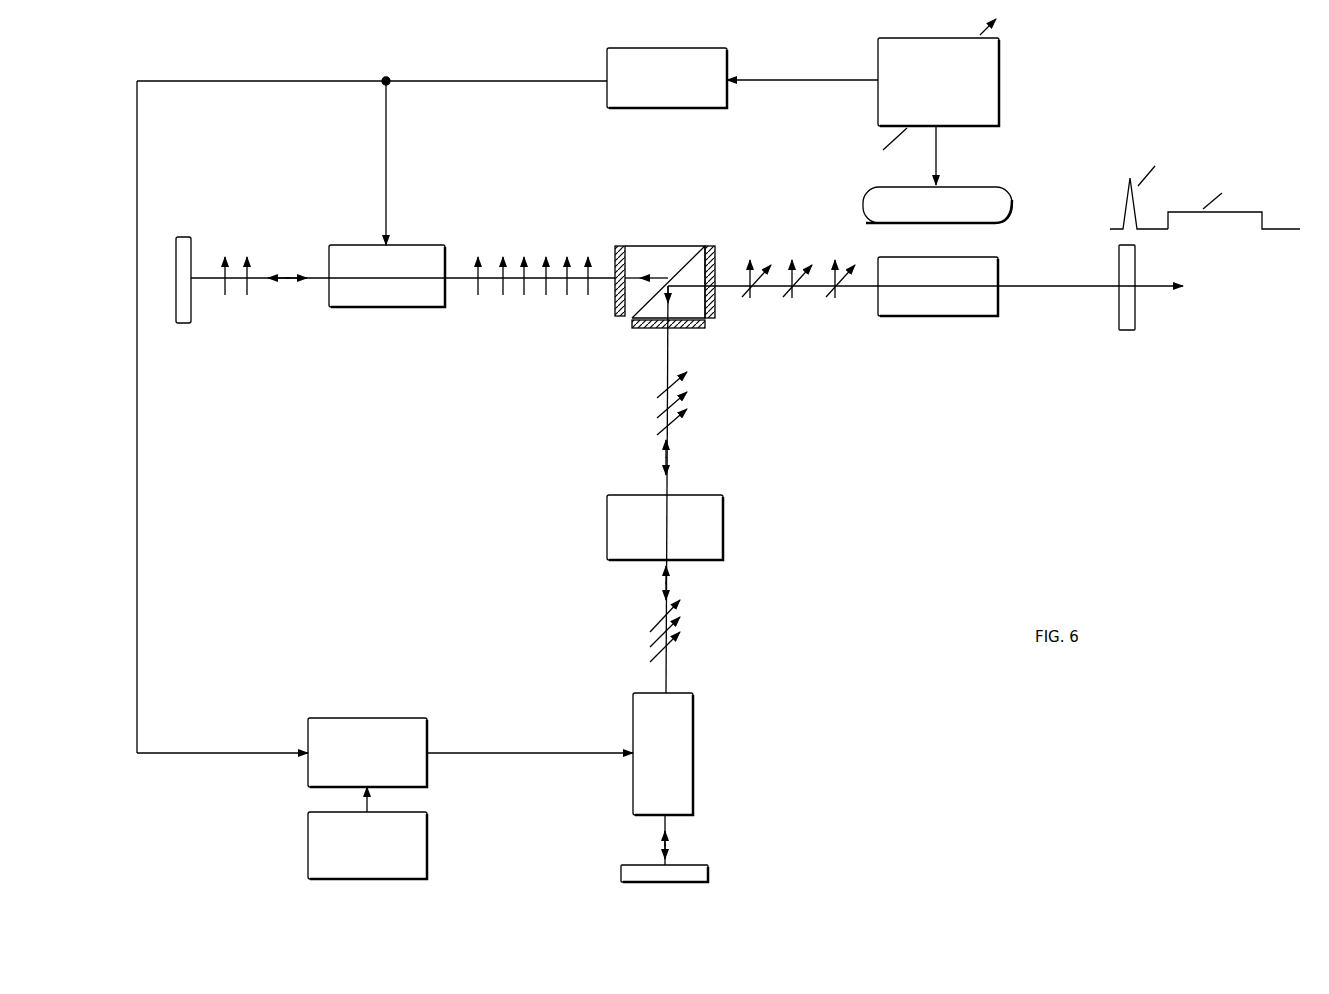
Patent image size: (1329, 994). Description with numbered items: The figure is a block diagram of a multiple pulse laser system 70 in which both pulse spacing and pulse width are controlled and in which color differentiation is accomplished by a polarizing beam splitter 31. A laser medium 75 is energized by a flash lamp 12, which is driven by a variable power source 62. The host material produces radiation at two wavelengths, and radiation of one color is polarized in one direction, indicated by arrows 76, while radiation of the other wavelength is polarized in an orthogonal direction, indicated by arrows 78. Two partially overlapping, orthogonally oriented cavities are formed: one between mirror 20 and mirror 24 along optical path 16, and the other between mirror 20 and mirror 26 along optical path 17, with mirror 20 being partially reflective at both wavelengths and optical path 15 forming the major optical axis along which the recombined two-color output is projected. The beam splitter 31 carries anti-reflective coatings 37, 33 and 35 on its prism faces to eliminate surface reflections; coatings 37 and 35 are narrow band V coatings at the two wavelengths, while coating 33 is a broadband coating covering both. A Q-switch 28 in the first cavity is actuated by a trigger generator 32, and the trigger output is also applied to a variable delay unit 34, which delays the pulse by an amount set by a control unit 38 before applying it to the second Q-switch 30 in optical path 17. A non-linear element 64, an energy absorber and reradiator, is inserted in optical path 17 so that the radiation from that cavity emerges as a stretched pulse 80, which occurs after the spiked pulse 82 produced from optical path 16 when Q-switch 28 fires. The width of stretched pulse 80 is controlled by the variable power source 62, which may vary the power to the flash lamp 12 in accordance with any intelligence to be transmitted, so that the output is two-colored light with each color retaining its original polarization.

The laser system 70 is at (1098, 492).
The mirror 24 is at (173, 260).
The Q-switch 28 is at (382, 312).
The trigger generator 32 is at (645, 110).
The variable power source 62 is at (1003, 95).
The flash lamp 12 is at (1007, 192).
The optical path 16 is at (465, 275).
The arrows 76 is at (476, 250).
The arrows 78 is at (727, 298).
The polarizing beam splitter 31 is at (670, 244).
The anti-reflective coating 37 is at (612, 300).
The anti-reflective coating 33 is at (718, 305).
The anti-reflective coating 35 is at (700, 330).
The laser medium 75 is at (898, 320).
The optical path 15 is at (1057, 278).
The mirror 20 is at (1137, 332).
The spiked pulse 82 is at (1130, 232).
The stretched pulse 80 is at (1222, 217).
The optical path 17 is at (668, 486).
The non-linear element 64 is at (728, 520).
The variable delay unit 34 is at (432, 716).
The control unit 38 is at (432, 825).
The Q-switching device 30 is at (698, 752).
The mirror 26 is at (713, 863).